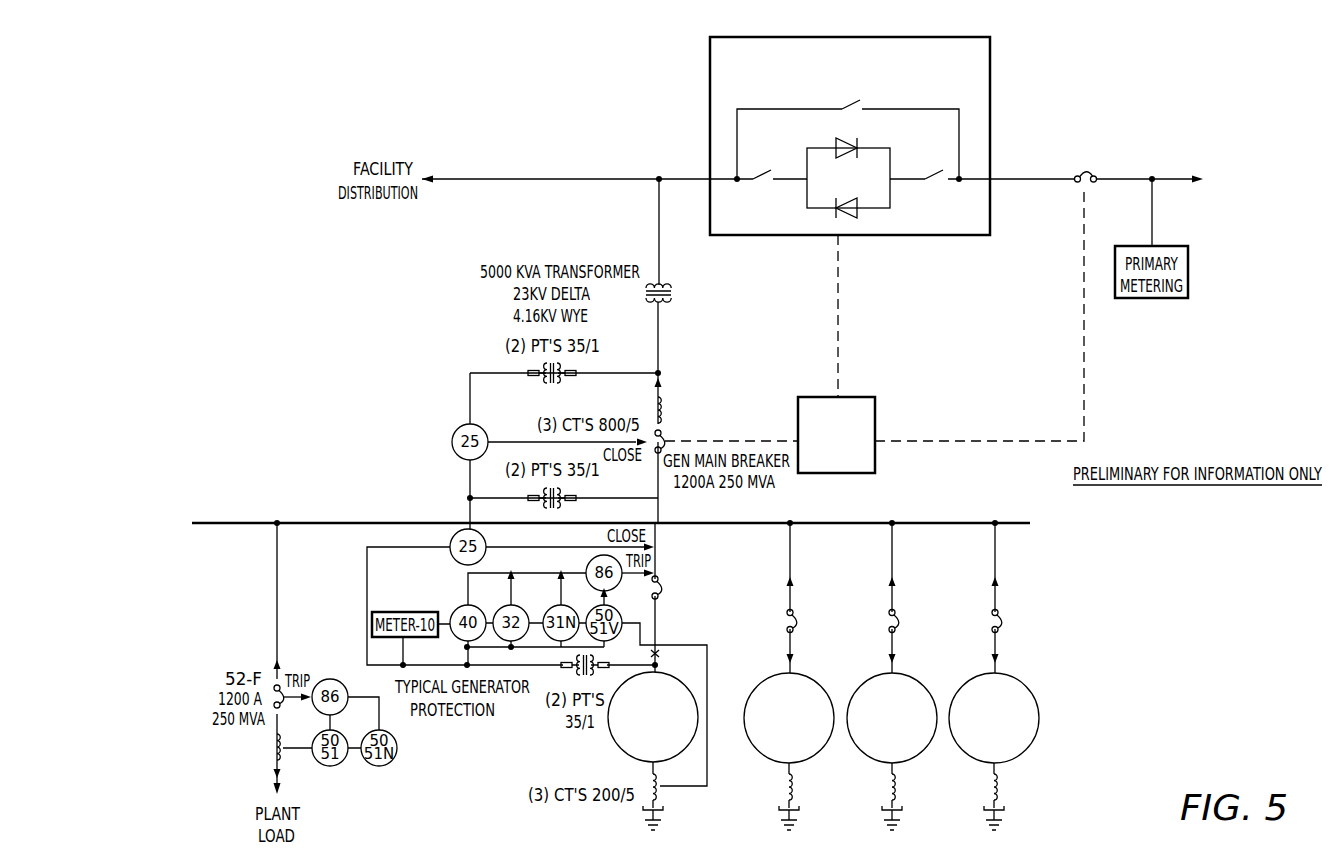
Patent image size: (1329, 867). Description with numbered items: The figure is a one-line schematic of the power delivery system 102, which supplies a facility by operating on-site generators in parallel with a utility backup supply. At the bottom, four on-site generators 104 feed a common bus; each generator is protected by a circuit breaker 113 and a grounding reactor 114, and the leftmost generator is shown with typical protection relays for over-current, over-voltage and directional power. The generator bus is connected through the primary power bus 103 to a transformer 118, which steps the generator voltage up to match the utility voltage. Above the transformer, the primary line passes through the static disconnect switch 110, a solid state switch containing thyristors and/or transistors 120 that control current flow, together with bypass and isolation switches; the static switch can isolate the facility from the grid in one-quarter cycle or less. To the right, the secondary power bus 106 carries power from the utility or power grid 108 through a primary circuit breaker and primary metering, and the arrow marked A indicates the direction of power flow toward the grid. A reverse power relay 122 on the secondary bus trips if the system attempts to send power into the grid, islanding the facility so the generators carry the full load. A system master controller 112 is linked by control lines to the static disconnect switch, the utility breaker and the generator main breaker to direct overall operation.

The power delivery system 102 is at (1144, 523).
The primary power bus 103 is at (655, 225).
The on-site generators 104 is at (613, 748).
The secondary power bus 106 is at (1188, 213).
The utility or power grid 108 is at (1252, 217).
The static disconnect switch 110 is at (812, 153).
The controller 112 is at (876, 417).
The circuit breakers 113 is at (658, 562).
The grounding reactors 114 is at (635, 815).
The transformer 118 is at (676, 291).
The thyristors and/or transistors 120 is at (830, 211).
The reverse power relay 122 is at (1067, 112).